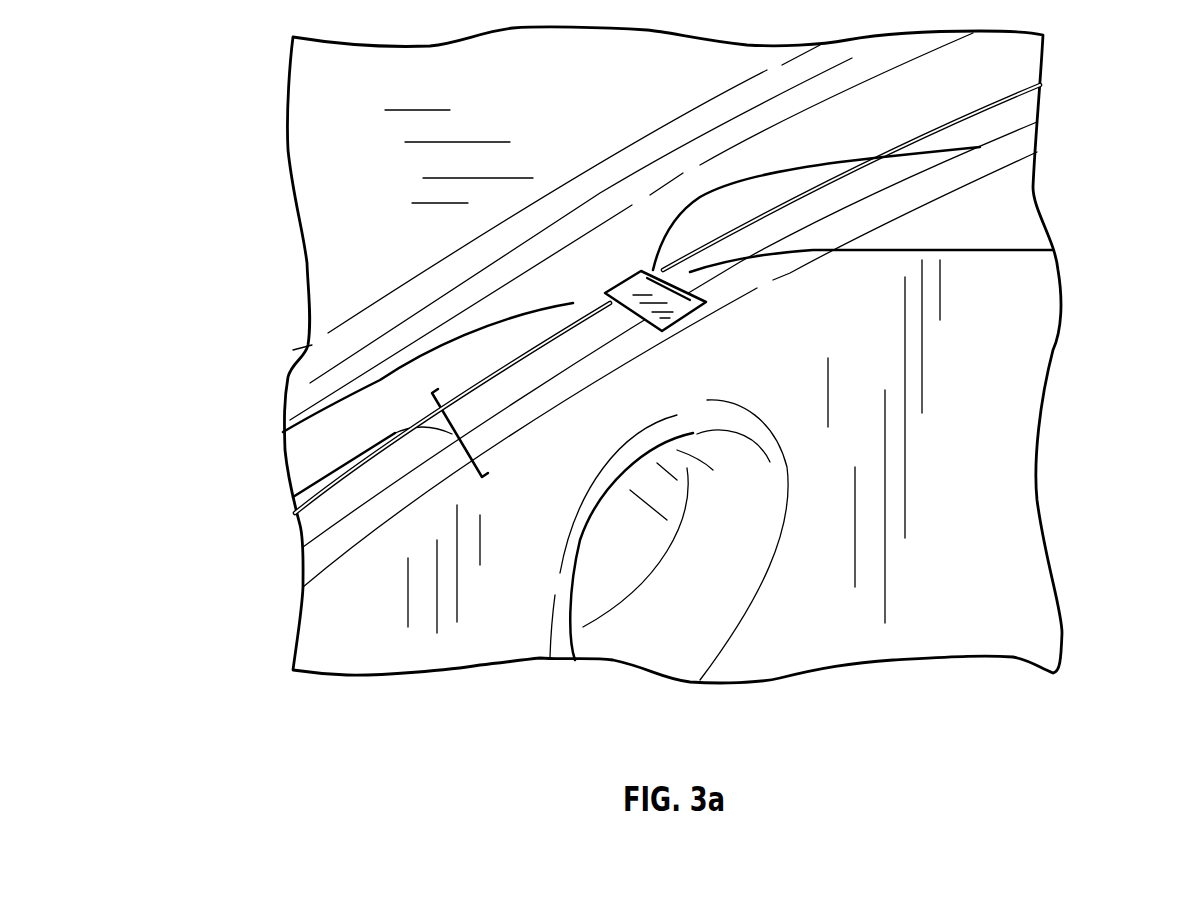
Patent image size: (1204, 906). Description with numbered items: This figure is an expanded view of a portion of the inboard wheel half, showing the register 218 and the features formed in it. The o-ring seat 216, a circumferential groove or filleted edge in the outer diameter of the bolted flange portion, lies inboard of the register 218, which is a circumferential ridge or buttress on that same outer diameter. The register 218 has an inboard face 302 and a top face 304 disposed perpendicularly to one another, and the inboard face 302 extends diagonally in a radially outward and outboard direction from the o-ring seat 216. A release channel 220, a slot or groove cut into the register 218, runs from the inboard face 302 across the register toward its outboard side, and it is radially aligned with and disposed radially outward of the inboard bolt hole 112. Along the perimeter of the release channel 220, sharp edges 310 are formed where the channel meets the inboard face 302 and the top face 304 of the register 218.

The inboard bolt hole 112 is at (620, 555).
The o-ring seat 216 is at (460, 313).
The register 218 is at (293, 497).
The release channel 220 is at (633, 287).
The inboard face 302 is at (283, 432).
The top face 304 is at (800, 216).
The sharp edge 310 is at (980, 147).